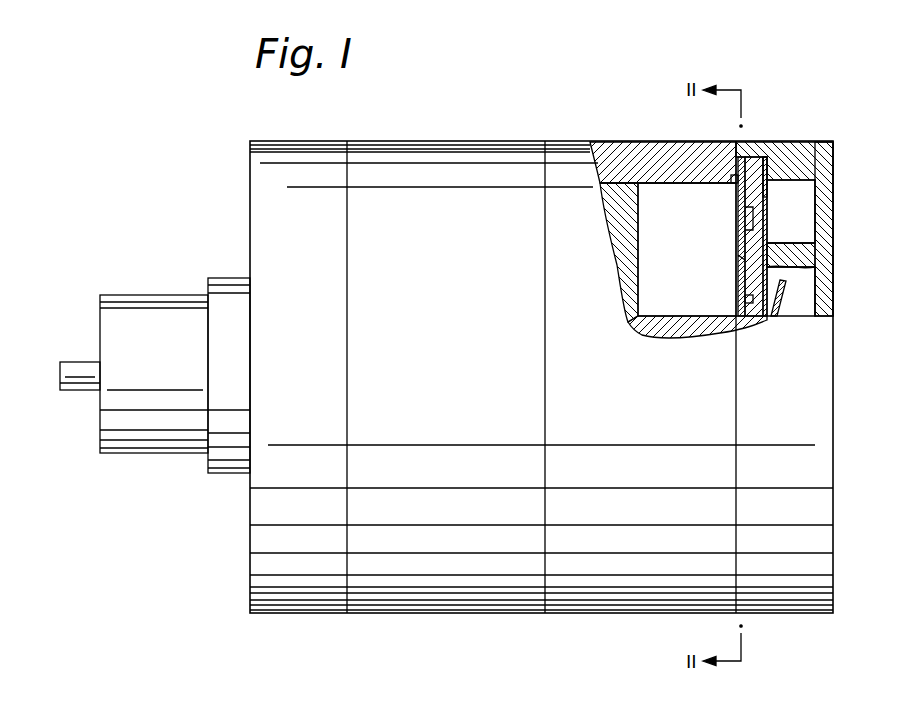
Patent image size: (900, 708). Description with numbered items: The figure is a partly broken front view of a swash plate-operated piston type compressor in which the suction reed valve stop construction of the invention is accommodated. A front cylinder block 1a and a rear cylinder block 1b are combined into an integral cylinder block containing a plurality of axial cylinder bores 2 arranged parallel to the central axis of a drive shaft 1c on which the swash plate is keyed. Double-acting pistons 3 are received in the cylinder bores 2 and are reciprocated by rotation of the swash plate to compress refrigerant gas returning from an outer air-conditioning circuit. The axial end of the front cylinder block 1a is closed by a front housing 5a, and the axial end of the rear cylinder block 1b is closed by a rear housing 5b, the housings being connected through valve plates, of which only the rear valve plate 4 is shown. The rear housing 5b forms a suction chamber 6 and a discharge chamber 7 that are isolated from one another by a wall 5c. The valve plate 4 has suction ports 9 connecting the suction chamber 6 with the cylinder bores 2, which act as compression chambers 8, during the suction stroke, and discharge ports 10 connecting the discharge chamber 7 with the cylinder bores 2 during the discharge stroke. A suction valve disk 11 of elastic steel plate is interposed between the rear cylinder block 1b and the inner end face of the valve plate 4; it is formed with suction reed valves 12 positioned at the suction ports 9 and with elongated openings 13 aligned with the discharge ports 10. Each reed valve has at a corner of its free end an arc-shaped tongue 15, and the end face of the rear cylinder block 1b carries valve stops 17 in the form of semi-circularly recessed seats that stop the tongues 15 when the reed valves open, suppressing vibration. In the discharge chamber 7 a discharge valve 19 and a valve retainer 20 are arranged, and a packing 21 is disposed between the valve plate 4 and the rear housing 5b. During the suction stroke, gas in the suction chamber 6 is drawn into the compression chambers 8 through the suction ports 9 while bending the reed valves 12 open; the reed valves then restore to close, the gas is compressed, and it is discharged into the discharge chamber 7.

The front cylinder block 1a is at (410, 181).
The rear cylinder block 1b is at (611, 142).
The drive shaft 1c is at (77, 386).
The cylinder bores 2 is at (677, 186).
The pistons 3 is at (634, 246).
The valve plate 4 is at (755, 160).
The front housing 5a is at (262, 566).
The rear housing 5b is at (833, 227).
The wall 5c is at (800, 257).
The suction chamber 6 is at (811, 193).
The discharge chamber 7 is at (807, 305).
The compression chambers 8 is at (692, 300).
The suction ports 9 is at (763, 218).
The discharge ports 10 is at (748, 296).
The suction valve disk 11 is at (740, 240).
The suction reed valves 12 is at (742, 211).
The elongated openings 13 is at (743, 257).
The tongue 15 is at (762, 191).
The valve stops 17 is at (734, 188).
The discharge valve 19 is at (813, 277).
The valve retainer 20 is at (776, 296).
The packing 21 is at (776, 168).